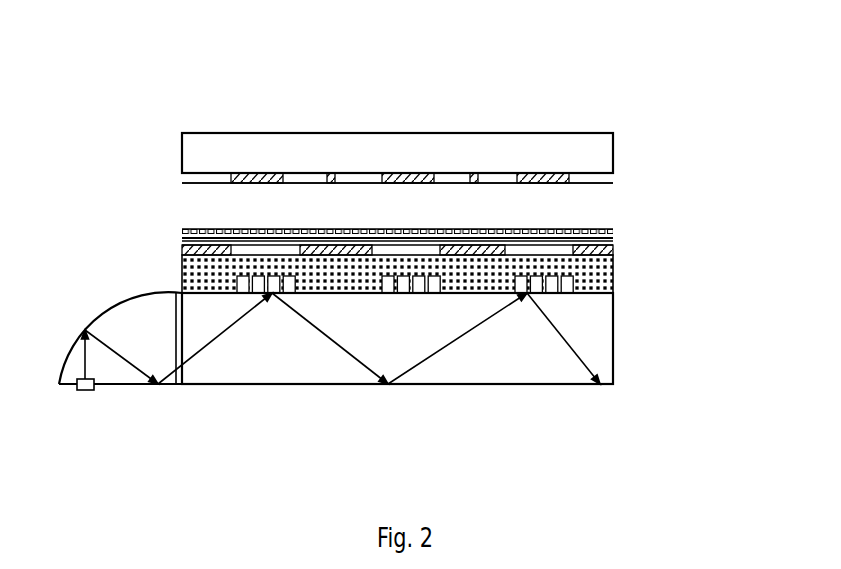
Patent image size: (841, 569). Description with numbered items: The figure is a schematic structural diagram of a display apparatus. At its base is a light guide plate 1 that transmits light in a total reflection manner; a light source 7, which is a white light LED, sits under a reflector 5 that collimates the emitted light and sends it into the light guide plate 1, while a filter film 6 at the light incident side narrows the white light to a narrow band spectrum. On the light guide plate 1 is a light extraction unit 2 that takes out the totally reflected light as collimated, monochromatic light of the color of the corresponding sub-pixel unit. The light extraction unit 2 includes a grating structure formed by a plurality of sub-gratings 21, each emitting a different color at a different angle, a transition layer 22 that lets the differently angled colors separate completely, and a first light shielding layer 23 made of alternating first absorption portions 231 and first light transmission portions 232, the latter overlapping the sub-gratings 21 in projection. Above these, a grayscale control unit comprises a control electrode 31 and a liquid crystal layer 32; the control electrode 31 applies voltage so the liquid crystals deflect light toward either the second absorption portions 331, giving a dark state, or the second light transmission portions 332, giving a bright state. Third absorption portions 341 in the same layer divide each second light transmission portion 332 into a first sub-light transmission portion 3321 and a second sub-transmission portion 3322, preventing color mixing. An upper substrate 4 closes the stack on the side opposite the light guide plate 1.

The light guide plate 1 is at (614, 337).
The light extraction unit 2 is at (431, 199).
The sub-gratings 21 is at (482, 287).
The transition layer 22 is at (614, 262).
The first light shielding layer 23 is at (422, 172).
The first absorption portions 231 is at (205, 233).
The first light transmission portions 232 is at (262, 252).
The control electrode 31 is at (614, 243).
The liquid crystal layer 32 is at (614, 210).
The second absorption portions 331 is at (272, 178).
The second light transmission portions 332 is at (481, 108).
The first sub-light transmission portion 3321 is at (450, 173).
The second sub-transmission portion 3322 is at (505, 173).
The third absorption portions 341 is at (337, 182).
The upper substrate 4 is at (592, 133).
The reflector 5 is at (120, 298).
The filter film 6 is at (176, 386).
The light source 7 is at (90, 390).